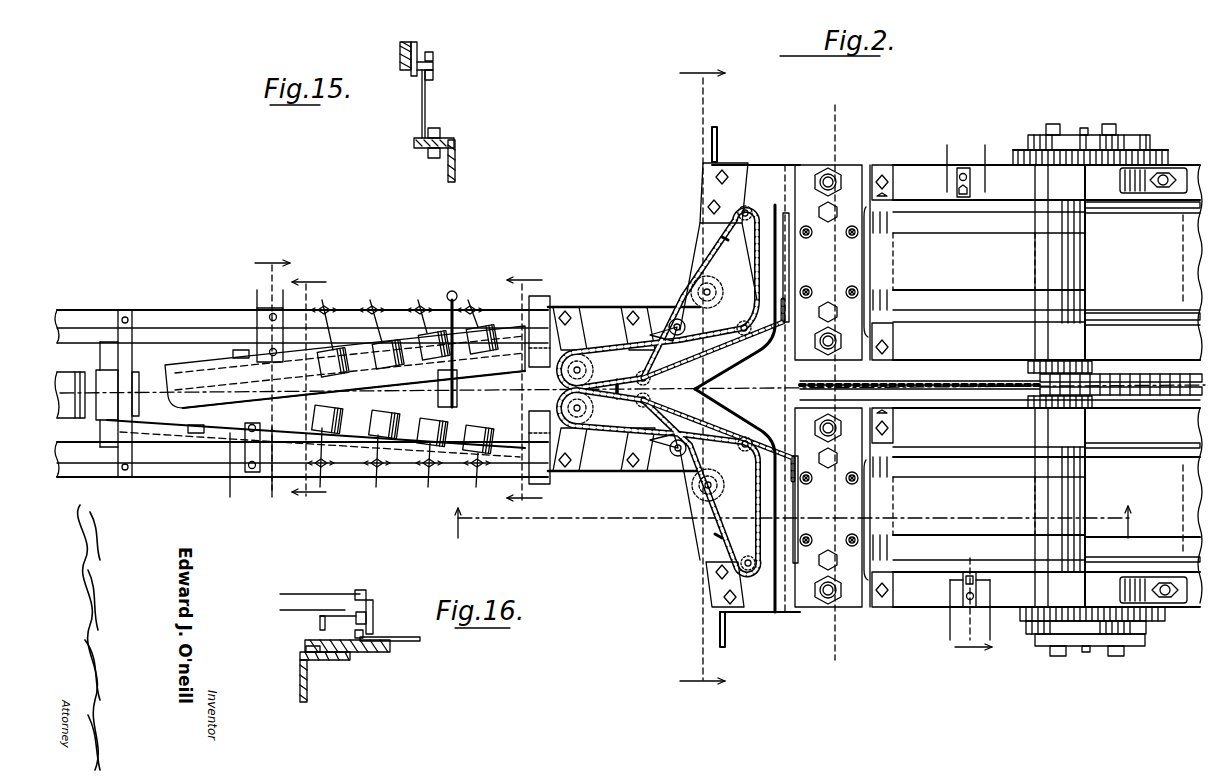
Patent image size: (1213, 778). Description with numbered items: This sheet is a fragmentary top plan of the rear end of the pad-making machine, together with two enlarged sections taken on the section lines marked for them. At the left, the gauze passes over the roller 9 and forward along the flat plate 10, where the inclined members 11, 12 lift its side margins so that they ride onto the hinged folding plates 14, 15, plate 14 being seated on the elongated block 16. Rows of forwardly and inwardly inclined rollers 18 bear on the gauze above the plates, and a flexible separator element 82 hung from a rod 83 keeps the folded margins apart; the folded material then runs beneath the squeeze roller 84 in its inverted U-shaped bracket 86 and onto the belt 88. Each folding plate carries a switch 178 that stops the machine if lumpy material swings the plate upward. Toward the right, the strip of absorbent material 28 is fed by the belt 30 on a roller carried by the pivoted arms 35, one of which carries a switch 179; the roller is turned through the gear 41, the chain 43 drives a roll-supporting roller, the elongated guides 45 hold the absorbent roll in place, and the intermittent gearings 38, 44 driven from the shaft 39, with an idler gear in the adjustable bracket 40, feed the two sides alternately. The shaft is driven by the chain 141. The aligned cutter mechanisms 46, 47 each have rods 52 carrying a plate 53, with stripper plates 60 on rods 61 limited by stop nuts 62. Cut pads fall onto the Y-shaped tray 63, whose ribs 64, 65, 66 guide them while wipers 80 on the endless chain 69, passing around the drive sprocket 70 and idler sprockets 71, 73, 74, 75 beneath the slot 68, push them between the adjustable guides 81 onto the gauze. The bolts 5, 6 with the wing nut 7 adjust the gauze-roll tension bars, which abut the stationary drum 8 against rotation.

In FIG. 2, the bolt 5 is at (795, 522).
In FIG. 2, the bolt 6 is at (421, 394).
In FIG. 2, the wing nut 7 is at (370, 310).
In FIG. 2, the stationary drum 8 is at (528, 387).
In FIG. 2, the roller 9 is at (309, 385).
In FIG. 2, the flat plate or board 10 is at (702, 376).
In FIG. 2, the inclined member 11 is at (580, 483).
In FIG. 2, the inclined member 12 is at (589, 330).
In FIG. 2, the hinged plate 14 is at (440, 460).
In FIG. 2, the hinged plate 15 is at (492, 332).
In FIG. 2, the elongated block 16 is at (272, 365).
In FIG. 2, the roller 18 is at (378, 343).
In FIG. 2, the strip of absorbent material 28 is at (1195, 255).
In FIG. 2, the endless belt 30 is at (935, 537).
In FIG. 2, the arm 35 is at (990, 448).
In FIG. 2, the intermittent gearing 38 is at (1082, 650).
In FIG. 2, the shaft / idler gear 39 is at (1165, 625).
In FIG. 2, the bracket 40 is at (1175, 600).
In FIG. 2, the gear 41 is at (1086, 363).
In FIG. 2, the chain 43 is at (1155, 383).
In FIG. 2, the intermittent gearing 44 is at (1084, 124).
In FIG. 2, the elongated guide 45 is at (1155, 562).
In FIG. 2, the cutter mechanism 46 is at (808, 595).
In FIG. 2, the cutter mechanism 47 is at (801, 172).
In FIG. 2, the rod 52 is at (829, 170).
In FIG. 2, the plate 53 is at (845, 200).
In FIG. 2, the stripper plate 60 is at (878, 462).
In FIG. 2, the rod 61 is at (735, 404).
In FIG. 2, the stop nut 62 is at (852, 232).
In FIG. 2, the Y-shaped tray 63 is at (670, 412).
In FIG. 2, the rib 64 is at (684, 310).
In FIG. 2, the rib 65 is at (740, 360).
In FIG. 2, the rib 66 is at (700, 462).
In FIG. 2, the slot 68 is at (770, 210).
In FIG. 2, the endless chain 69 is at (722, 235).
In FIG. 2, the drive sprocket 70 is at (705, 278).
In FIG. 2, the idler sprocket 71 is at (718, 596).
In FIG. 2, the idler sprocket 73 is at (640, 368).
In FIG. 2, the idler sprocket 74 is at (556, 391).
In FIG. 2, the idler sprocket 75 is at (672, 470).
In FIG. 2, the wiper 80 is at (752, 255).
In FIG. 2, the adjustable guide 81 is at (495, 335).
In FIG. 2, the flexible separator element 82 is at (300, 420).
In FIG. 2, the rod 83 is at (450, 300).
In FIG. 2, the squeeze roller 84 is at (140, 368).
In FIG. 2, the inverted U-shaped bracket 86 is at (127, 352).
In FIG. 2, the belt 88 is at (68, 345).
In FIG. 2, the chain 141 is at (946, 384).
In FIG. 2, the switch 178 is at (265, 330).
In FIG. 2, the switch 179 is at (960, 190).
In FIG. 15, the switch 179 is at (433, 80).